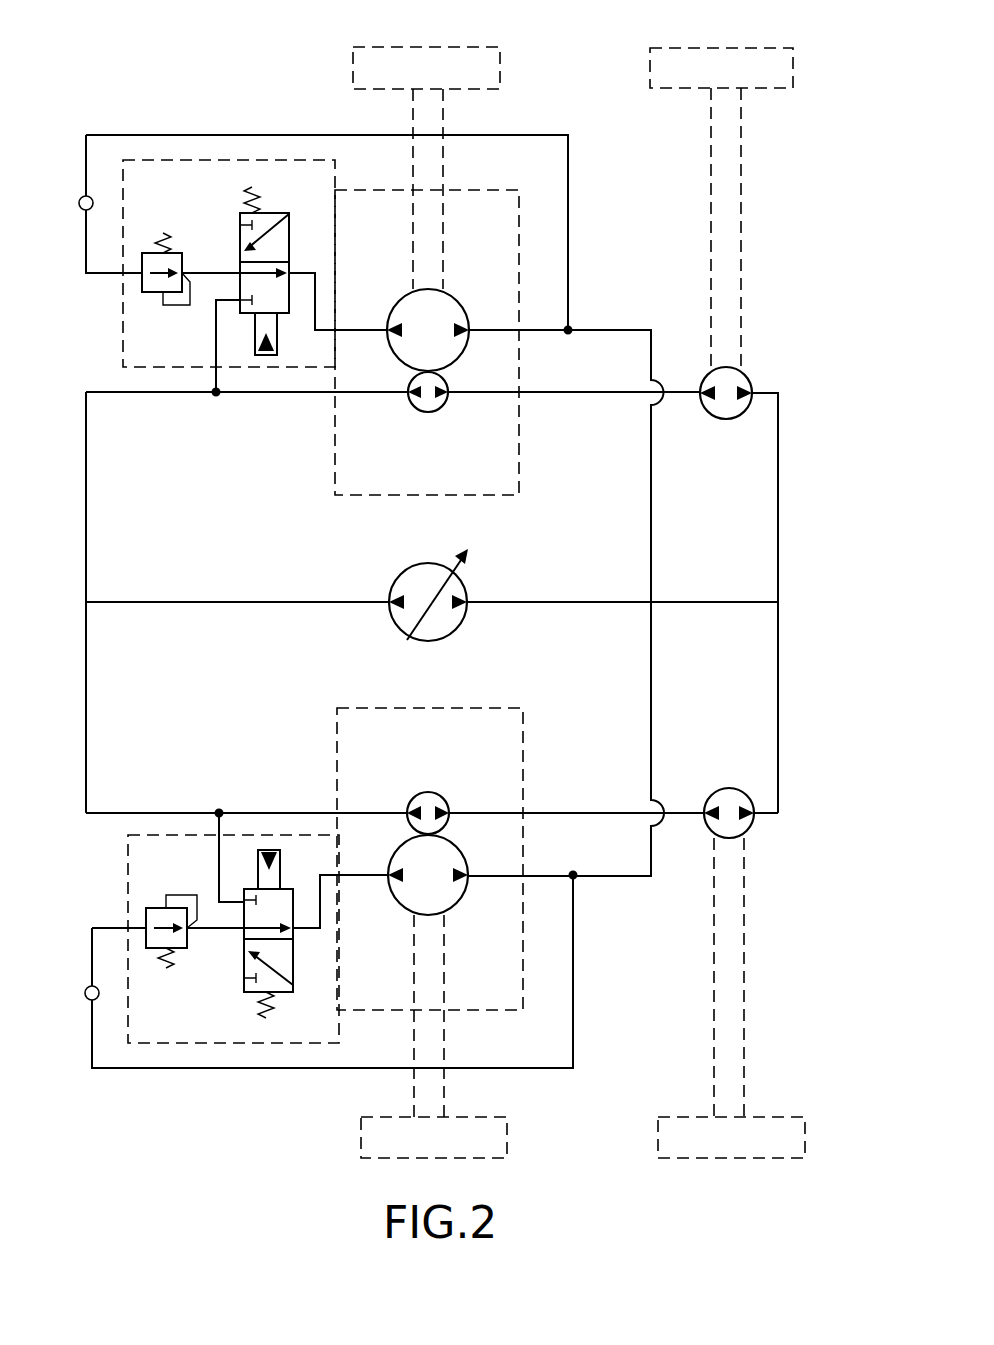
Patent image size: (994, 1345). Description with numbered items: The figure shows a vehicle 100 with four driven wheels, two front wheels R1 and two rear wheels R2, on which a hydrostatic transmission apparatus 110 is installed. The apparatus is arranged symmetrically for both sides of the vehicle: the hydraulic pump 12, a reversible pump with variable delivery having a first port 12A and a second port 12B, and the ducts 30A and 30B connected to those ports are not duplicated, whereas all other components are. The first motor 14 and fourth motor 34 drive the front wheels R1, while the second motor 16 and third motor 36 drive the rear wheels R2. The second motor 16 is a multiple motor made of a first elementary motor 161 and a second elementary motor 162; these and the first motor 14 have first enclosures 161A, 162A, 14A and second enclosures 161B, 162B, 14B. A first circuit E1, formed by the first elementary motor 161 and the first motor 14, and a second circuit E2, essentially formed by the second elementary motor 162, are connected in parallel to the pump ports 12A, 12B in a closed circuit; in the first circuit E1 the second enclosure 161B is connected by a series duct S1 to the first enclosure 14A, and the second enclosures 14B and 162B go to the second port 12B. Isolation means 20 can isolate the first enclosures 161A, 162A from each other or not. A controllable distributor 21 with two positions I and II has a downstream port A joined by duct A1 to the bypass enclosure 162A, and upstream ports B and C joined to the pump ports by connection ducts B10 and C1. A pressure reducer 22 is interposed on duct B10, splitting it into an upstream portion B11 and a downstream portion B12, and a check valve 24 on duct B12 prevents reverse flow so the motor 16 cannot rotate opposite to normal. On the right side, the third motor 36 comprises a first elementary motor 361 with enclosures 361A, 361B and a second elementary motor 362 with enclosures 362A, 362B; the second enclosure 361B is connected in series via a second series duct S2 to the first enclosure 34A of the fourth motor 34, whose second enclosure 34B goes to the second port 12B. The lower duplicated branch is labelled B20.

The vehicle 100 is at (558, 80).
The hydrostatic transmission apparatus 110 is at (596, 214).
The hydraulic pump 12 is at (434, 577).
The first port 12A is at (392, 598).
The second port 12B is at (470, 598).
The first hydraulic motor 14 is at (734, 580).
The first enclosure of first motor 14A is at (702, 400).
The second enclosure of first motor 14B is at (750, 390).
The second hydraulic motor 16 is at (454, 276).
The first elementary motor 161 is at (432, 416).
The first enclosure of first elementary motor 161A is at (409, 400).
The second enclosure of first elementary motor 161B is at (449, 400).
The second elementary motor 162 is at (433, 325).
The first enclosure of second elementary motor 162A is at (382, 346).
The second enclosure of second elementary motor 162B is at (470, 342).
The isolation means 20 is at (262, 237).
The controllable distributor 21 is at (246, 320).
The pressure reducer 22 is at (150, 292).
The check valve 24 is at (80, 200).
The duct 30A is at (224, 599).
The duct 30B is at (576, 599).
The fourth motor 34 is at (737, 815).
The first enclosure of fourth motor 34A is at (706, 804).
The second enclosure of fourth motor 34B is at (752, 822).
The third motor 36 is at (456, 936).
The first elementary motor of third motor 361 is at (435, 792).
The first enclosure of first elementary motor of third motor 361A is at (412, 804).
The second enclosure of first elementary motor of third motor 361B is at (450, 804).
The second elementary motor of third motor 362 is at (434, 888).
The first enclosure of second elementary motor of third motor 362A is at (388, 871).
The second enclosure of second elementary motor of third motor 362B is at (488, 855).
The downstream port A is at (289, 215).
The duct A1 is at (329, 249).
The upstream port B is at (242, 226).
The connection duct B10 is at (117, 133).
The upstream portion B11 is at (208, 272).
The downstream portion B12 is at (176, 135).
The second bypass branch B20 is at (164, 1074).
The upstream port C is at (242, 250).
The connection duct C1 is at (216, 342).
The first circuit E1 is at (558, 398).
The second circuit E2 is at (613, 320).
The first position I is at (242, 214).
The second position II is at (289, 298).
The front wheels R1 is at (727, 62).
The rear wheels R2 is at (428, 62).
The series duct S1 is at (584, 390).
The second series duct S2 is at (584, 818).